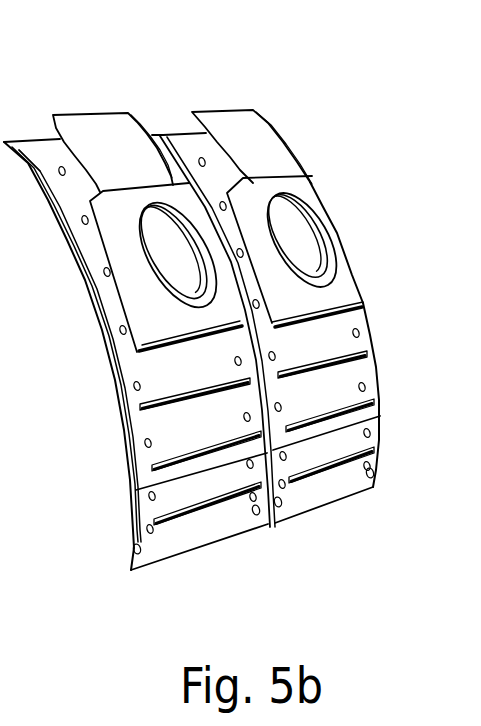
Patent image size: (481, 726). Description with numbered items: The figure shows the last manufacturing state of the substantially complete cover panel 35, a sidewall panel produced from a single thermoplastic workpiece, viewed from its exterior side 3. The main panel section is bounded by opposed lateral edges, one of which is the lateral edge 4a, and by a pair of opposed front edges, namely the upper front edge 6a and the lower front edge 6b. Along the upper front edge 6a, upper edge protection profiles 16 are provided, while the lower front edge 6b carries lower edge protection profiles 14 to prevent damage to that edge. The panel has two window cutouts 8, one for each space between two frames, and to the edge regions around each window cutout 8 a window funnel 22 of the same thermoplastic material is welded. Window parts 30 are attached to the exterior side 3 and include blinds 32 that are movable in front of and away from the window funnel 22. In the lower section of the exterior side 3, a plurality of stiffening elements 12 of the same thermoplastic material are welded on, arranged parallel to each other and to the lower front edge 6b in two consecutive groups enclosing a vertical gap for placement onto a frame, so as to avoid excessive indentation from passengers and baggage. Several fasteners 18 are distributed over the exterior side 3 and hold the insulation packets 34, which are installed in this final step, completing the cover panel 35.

The exterior side 3 is at (218, 156).
The lateral edge 4a is at (20, 244).
The upper front edge 6a is at (163, 104).
The lower front edge 6b is at (266, 536).
The window cutout 8 is at (307, 240).
The stiffening element 12 is at (363, 393).
The lower edge protection profile 14 is at (214, 533).
The upper edge protection profile 16 is at (55, 137).
The fastener 18 is at (133, 387).
The window funnel 22 is at (333, 262).
The window part 30 is at (310, 190).
The blind 32 is at (118, 125).
The insulation packet 34 is at (342, 337).
The cover panel 35 is at (290, 99).